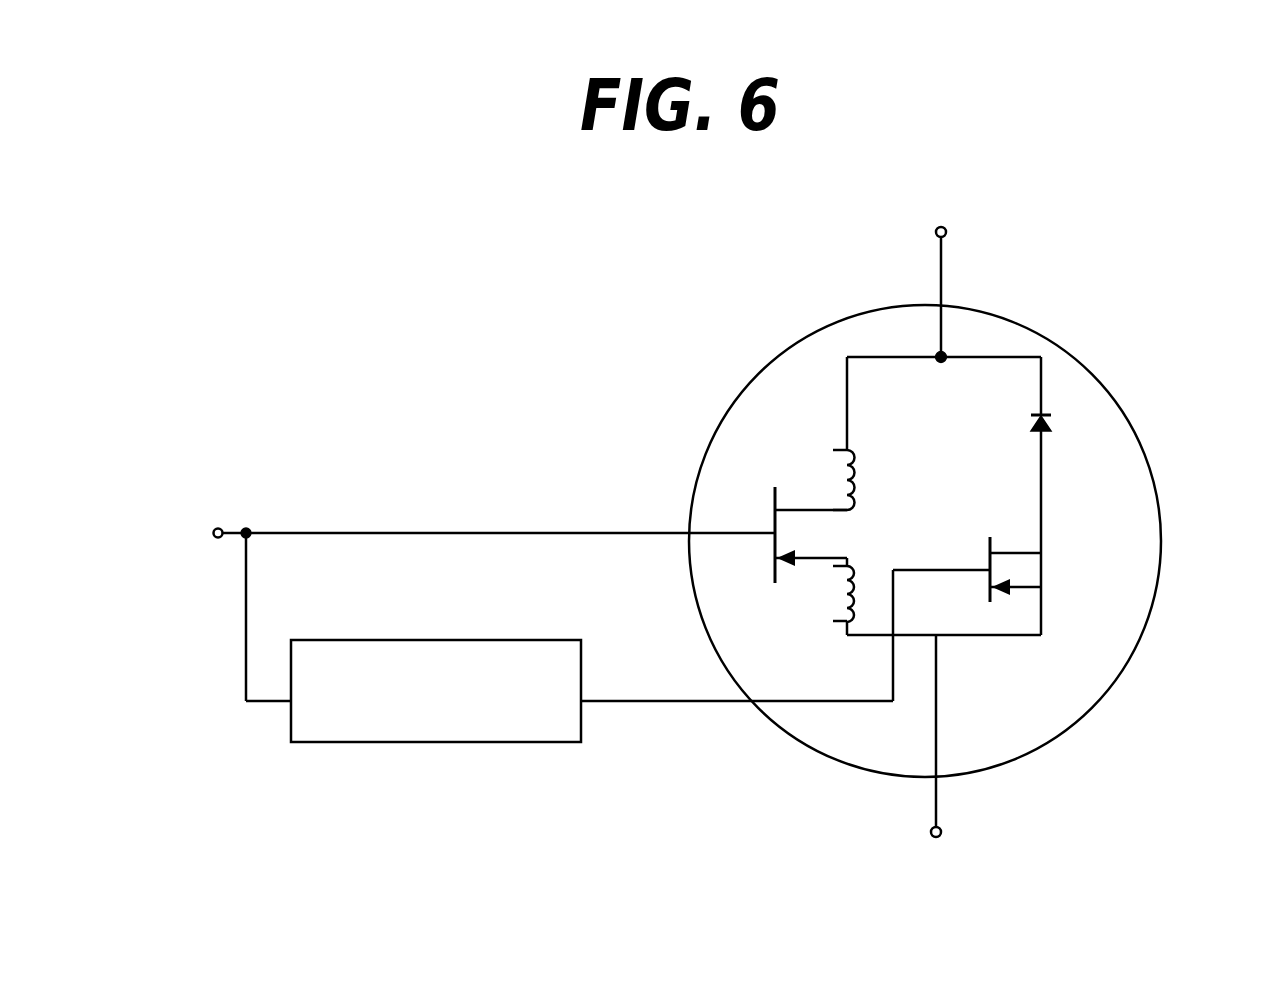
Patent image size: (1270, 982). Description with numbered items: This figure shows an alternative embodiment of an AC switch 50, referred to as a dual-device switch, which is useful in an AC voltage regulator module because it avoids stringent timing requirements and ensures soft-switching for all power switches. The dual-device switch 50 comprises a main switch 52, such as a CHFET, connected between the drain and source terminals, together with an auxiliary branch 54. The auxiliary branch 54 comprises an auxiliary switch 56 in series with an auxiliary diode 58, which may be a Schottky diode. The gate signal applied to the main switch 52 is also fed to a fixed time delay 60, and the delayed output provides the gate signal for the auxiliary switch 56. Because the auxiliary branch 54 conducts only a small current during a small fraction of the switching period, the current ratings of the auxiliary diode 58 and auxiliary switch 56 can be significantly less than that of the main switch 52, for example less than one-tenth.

The AC switch 50 is at (444, 297).
The main switch 52 is at (775, 516).
The auxiliary branch 54 is at (1108, 484).
The auxiliary switch 56 is at (995, 567).
The auxiliary diode 58 is at (1050, 424).
The fixed time delay 60 is at (513, 742).